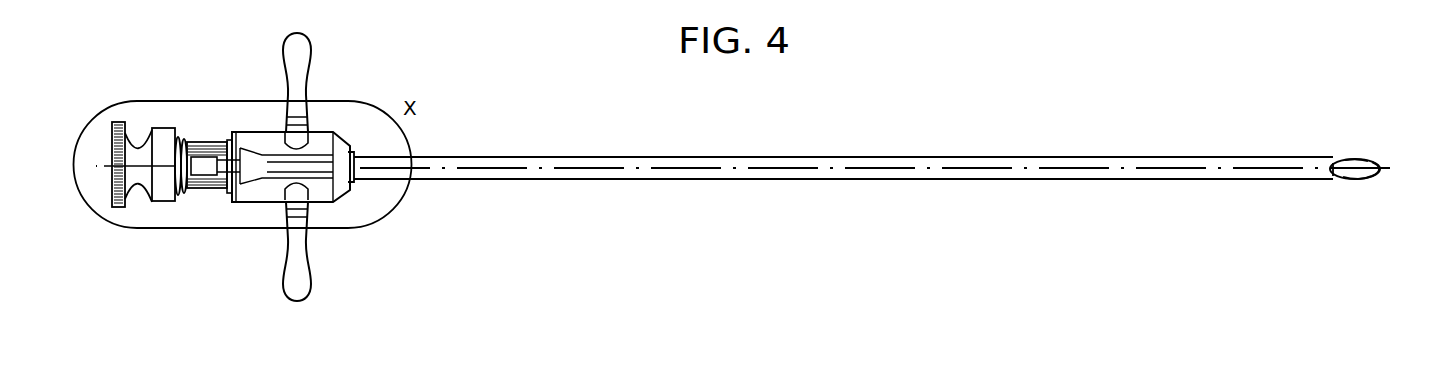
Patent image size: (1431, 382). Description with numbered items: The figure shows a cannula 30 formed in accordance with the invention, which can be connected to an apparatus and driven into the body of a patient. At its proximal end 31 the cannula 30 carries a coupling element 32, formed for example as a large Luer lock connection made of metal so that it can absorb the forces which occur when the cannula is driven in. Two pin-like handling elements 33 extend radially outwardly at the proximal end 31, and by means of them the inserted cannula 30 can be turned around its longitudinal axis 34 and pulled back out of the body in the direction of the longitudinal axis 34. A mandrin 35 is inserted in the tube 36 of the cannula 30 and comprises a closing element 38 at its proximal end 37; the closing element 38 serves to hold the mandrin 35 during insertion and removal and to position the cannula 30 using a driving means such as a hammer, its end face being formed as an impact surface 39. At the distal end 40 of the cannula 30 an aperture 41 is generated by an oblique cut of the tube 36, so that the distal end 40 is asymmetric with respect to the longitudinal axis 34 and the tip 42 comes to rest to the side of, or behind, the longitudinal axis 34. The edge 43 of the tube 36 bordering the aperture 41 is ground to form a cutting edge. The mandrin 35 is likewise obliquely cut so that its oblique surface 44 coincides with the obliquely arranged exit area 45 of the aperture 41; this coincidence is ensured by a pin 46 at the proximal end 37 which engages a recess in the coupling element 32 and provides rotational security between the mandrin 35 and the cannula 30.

The cannula 30 is at (639, 187).
The proximal end 31 is at (326, 207).
The coupling element 32 is at (225, 193).
The handling elements 33 is at (300, 50).
The longitudinal axis 34 is at (733, 170).
The mandrin 35 is at (224, 158).
The tube 36 is at (962, 157).
The proximal end 37 is at (175, 208).
The closing element 38 is at (141, 190).
The impact surface 39 is at (112, 127).
The distal end 40 is at (1345, 160).
The aperture 41 is at (1355, 181).
The tip 42 is at (1378, 162).
The edge 43 is at (1370, 180).
The oblique surface 44 is at (1336, 180).
The exit area 45 is at (1358, 160).
The pin 46 is at (190, 142).